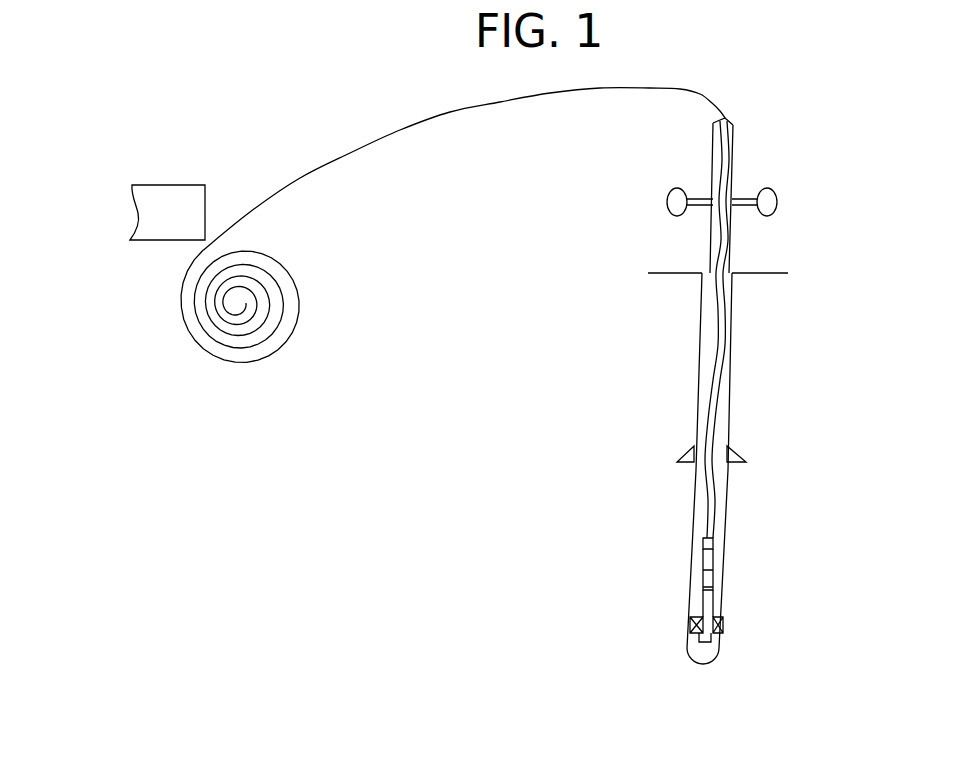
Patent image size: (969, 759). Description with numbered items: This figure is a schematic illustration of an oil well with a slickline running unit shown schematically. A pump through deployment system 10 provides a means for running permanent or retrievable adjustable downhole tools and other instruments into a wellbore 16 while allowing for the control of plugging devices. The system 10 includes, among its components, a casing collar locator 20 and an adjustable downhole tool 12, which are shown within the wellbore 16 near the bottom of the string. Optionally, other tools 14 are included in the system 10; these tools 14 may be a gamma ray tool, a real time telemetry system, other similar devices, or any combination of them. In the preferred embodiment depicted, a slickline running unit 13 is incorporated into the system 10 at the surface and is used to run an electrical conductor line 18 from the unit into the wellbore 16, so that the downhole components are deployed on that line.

The pump through deployment system 10 is at (838, 190).
The adjustable downhole tool 12 is at (722, 627).
The slickline running unit 13 is at (204, 336).
The other tools 14 is at (706, 560).
The wellbore 16 is at (729, 404).
The electrical conductor line 18 is at (545, 97).
The casing collar locator 20 is at (715, 545).